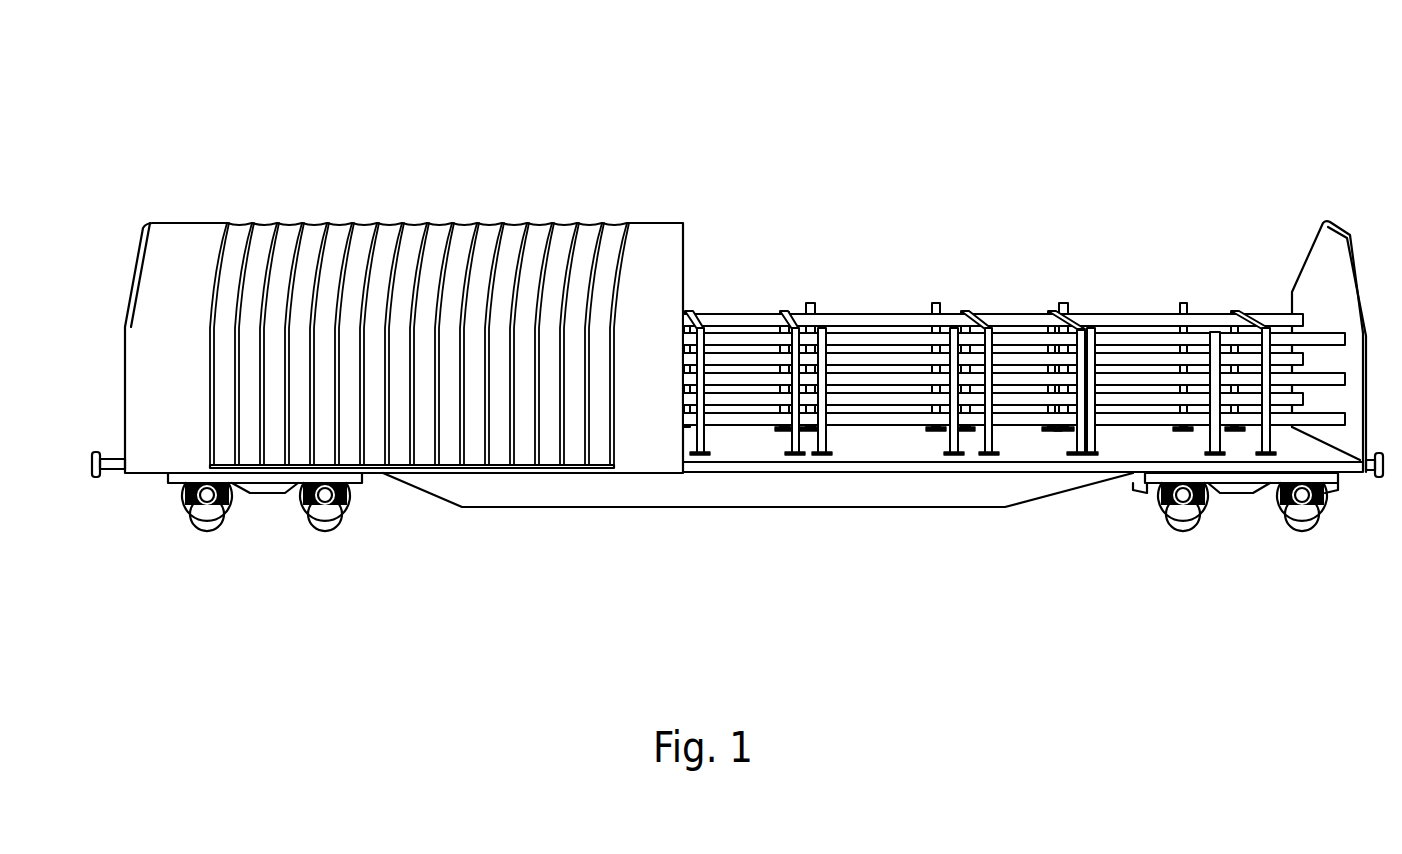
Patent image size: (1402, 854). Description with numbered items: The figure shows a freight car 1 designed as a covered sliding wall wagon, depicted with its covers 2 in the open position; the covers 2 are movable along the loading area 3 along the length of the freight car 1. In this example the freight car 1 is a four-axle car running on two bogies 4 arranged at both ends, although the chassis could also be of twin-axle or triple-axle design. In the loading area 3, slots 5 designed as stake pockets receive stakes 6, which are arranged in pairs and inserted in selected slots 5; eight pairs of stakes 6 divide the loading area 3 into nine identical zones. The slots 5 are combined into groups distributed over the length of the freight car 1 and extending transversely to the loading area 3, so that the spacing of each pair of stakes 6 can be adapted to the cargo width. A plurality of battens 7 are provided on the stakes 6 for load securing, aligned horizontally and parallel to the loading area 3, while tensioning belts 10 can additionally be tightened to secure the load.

The freight car 1 is at (657, 553).
The covers 2 is at (472, 262).
The loading area 3 is at (910, 442).
The bogies 4 is at (275, 478).
The slots 5 is at (823, 453).
The stakes 6 is at (1213, 420).
The battens 7 is at (1028, 322).
The tensioning belts 10 is at (697, 430).